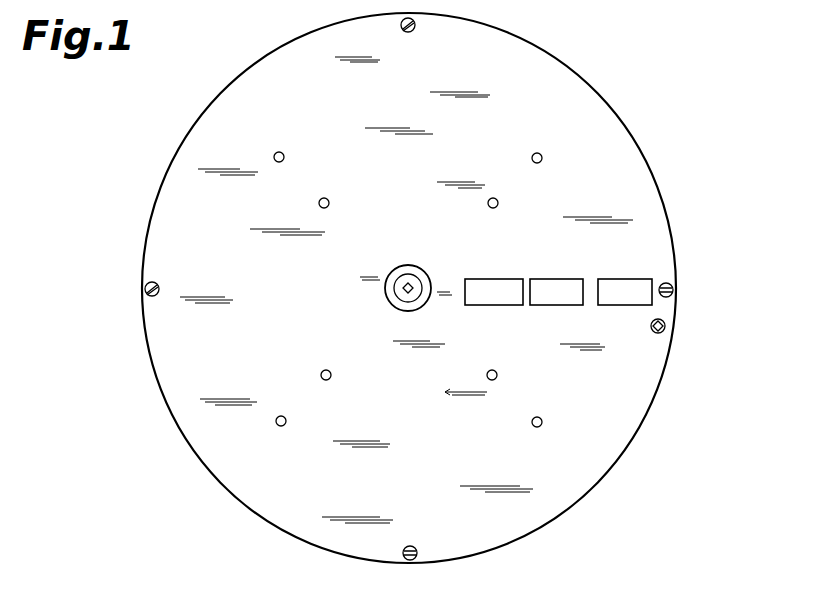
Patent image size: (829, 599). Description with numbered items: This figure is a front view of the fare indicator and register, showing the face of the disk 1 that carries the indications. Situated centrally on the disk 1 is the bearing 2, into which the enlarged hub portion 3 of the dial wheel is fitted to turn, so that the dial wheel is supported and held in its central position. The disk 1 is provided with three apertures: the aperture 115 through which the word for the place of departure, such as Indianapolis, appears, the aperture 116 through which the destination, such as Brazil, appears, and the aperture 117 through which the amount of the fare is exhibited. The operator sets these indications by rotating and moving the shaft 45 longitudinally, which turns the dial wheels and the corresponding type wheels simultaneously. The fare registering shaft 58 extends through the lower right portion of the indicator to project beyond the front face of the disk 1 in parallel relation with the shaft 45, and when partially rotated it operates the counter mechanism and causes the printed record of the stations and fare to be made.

The disk 1 is at (638, 420).
The bearing 2 is at (423, 306).
The hub portion 3 is at (145, 289).
The shaft 45 is at (405, 292).
The fare registering shaft 58 is at (665, 326).
The aperture 115 is at (508, 303).
The aperture 116 is at (567, 305).
The aperture 117 is at (628, 305).